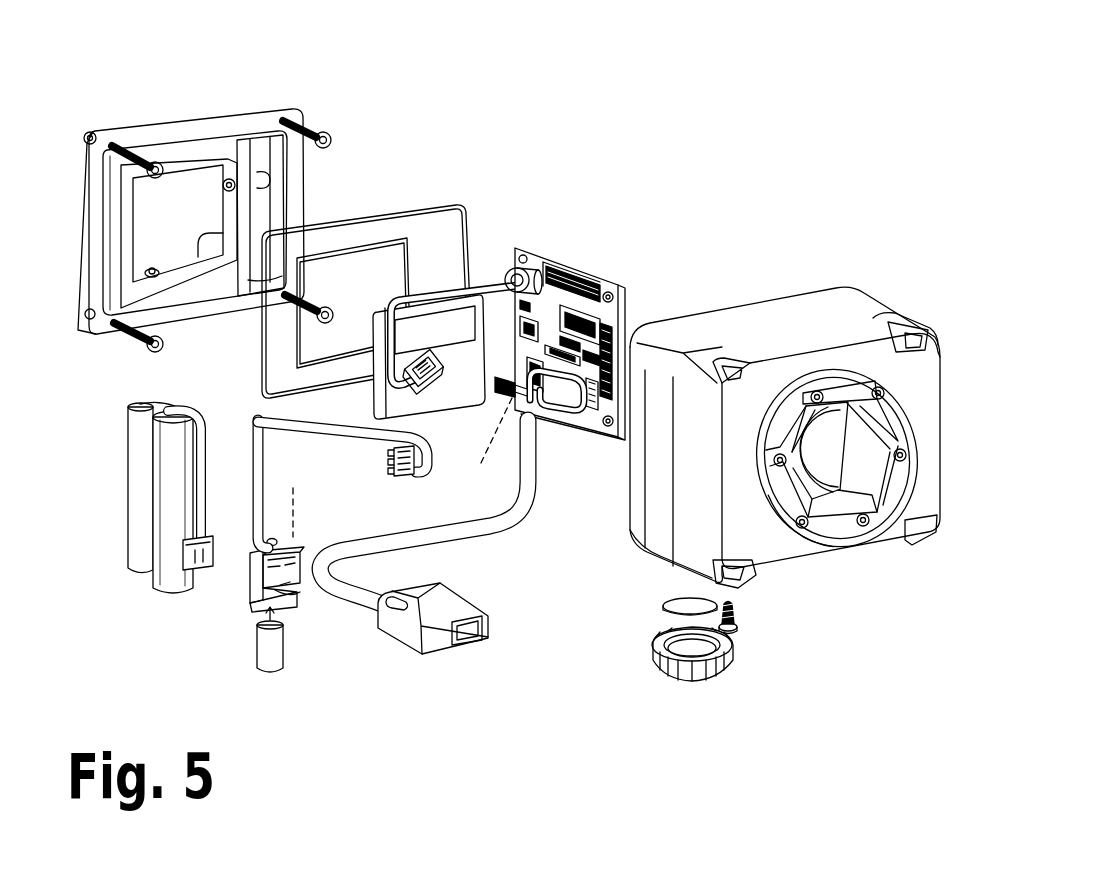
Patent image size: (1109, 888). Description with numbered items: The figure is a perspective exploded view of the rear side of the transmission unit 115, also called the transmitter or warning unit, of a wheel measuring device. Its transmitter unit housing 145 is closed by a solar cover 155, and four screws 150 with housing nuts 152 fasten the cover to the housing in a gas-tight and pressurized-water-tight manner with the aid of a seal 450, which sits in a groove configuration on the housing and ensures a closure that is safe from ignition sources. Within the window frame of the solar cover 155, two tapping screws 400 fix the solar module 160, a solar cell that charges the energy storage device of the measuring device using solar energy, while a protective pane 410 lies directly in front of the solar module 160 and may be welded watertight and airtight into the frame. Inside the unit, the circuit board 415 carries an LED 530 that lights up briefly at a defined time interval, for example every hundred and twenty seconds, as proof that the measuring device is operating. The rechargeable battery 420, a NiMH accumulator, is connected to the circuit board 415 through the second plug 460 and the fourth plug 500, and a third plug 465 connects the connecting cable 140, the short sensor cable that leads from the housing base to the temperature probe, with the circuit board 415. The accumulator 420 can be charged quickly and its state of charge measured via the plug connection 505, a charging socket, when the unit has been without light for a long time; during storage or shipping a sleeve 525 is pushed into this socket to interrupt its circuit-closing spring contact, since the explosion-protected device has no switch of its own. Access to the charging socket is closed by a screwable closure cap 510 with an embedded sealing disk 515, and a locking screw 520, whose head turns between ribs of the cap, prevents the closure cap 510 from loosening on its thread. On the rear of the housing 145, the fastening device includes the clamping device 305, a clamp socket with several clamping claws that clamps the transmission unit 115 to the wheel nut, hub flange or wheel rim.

The transmission unit 115 is at (297, 96).
The solar cover 155 is at (232, 118).
The screws 150 is at (324, 302).
The housing nuts 152 is at (320, 177).
The tapping screws 400 is at (197, 195).
The seal 450 is at (458, 203).
The protective pane 410 is at (384, 278).
The solar module 160 is at (445, 393).
The LED 530 is at (492, 322).
The circuit board 415 is at (588, 272).
The third plug 465 is at (543, 342).
The transmitter unit housing 145 is at (787, 315).
The clamping device 305 is at (835, 527).
The rechargeable battery 420 is at (145, 535).
The second plug 460 is at (210, 537).
The plug connection 505 is at (293, 560).
The sleeve 525 is at (283, 646).
The fourth plug 500 is at (418, 470).
The connecting cable 140 is at (507, 522).
The sealing disk 515 is at (663, 603).
The closure cap 510 is at (648, 650).
The locking screw 520 is at (738, 628).